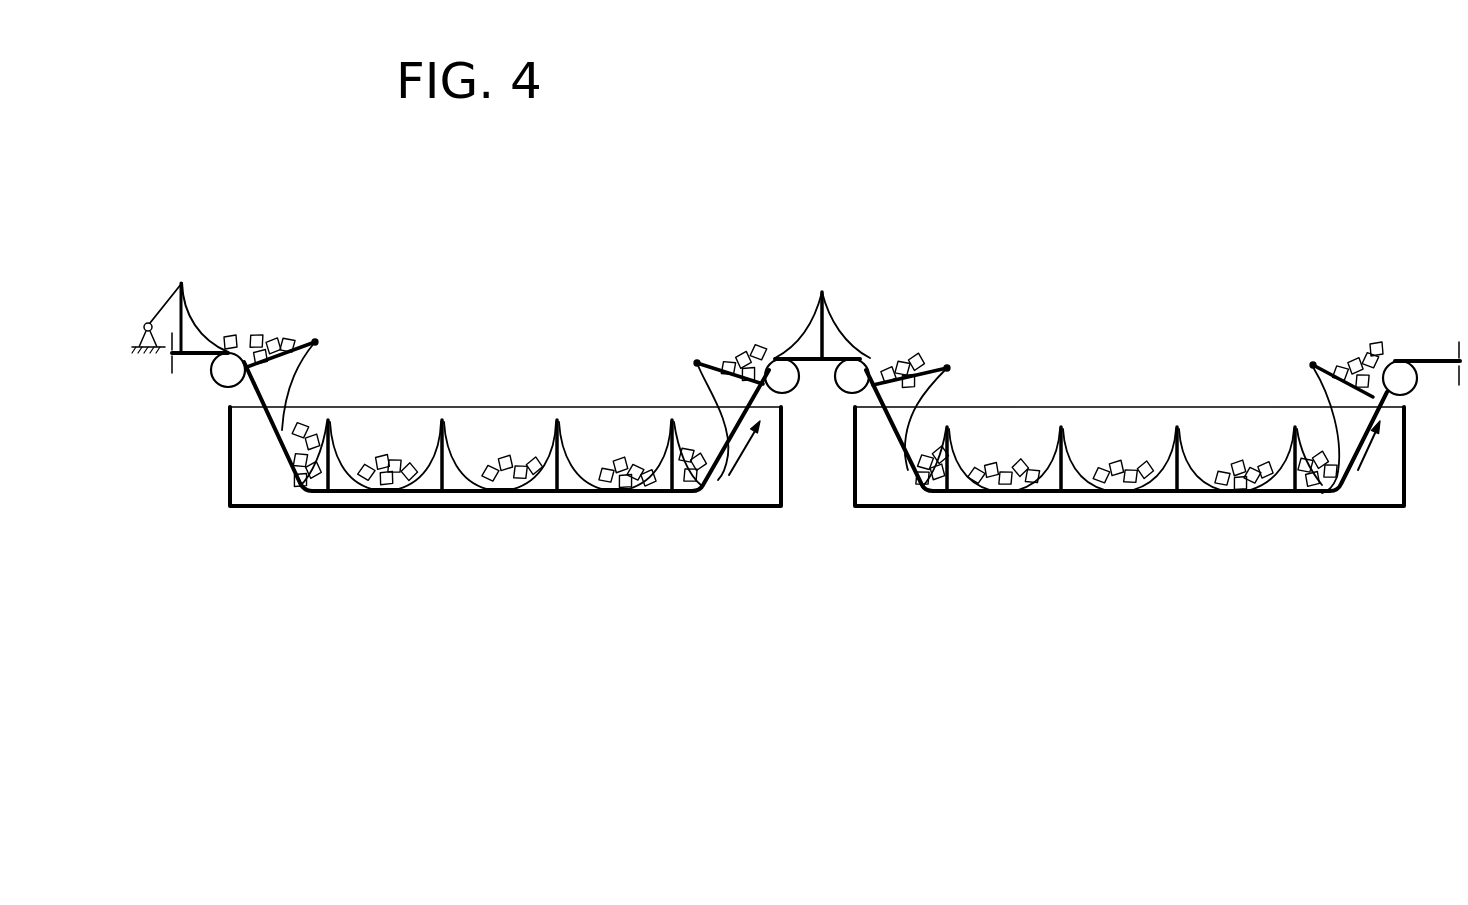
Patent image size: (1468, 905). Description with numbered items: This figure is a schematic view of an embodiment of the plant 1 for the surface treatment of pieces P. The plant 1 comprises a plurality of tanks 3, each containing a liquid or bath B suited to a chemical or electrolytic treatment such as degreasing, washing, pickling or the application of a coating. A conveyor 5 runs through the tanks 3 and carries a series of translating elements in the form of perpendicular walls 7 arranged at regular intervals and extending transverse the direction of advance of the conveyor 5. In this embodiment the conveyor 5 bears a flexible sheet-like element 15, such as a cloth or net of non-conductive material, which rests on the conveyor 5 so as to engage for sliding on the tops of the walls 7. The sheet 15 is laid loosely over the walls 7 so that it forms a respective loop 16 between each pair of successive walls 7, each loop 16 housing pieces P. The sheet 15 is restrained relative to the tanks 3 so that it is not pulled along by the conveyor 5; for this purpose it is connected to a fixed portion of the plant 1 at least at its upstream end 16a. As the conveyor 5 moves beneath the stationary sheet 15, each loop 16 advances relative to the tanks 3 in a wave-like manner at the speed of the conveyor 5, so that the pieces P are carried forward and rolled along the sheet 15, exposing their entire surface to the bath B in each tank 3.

The plant 1 is at (988, 308).
The tank 3 is at (745, 509).
The conveyor 5 is at (458, 489).
The translating elements (walls) 7 is at (440, 415).
The flexible sheet-like element 15 is at (462, 439).
The loop 16 is at (543, 425).
The upstream end 16a is at (172, 285).
The bath B is at (369, 413).
The pieces P is at (258, 341).